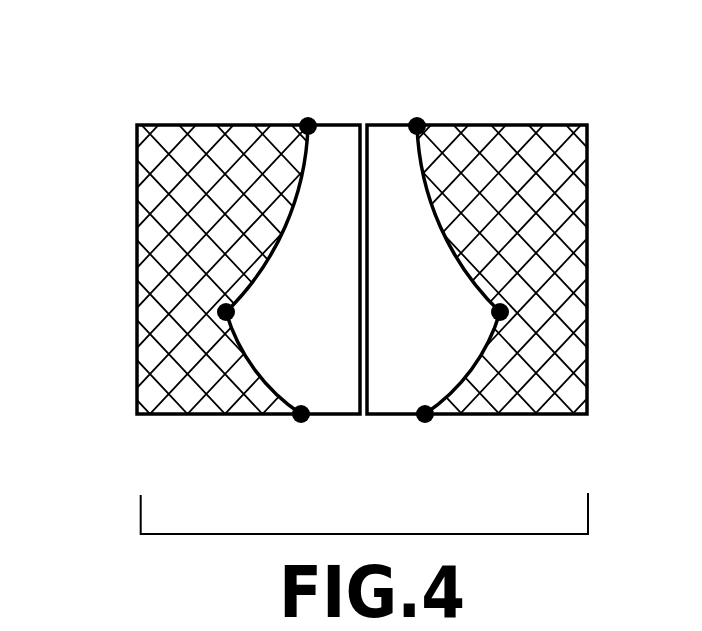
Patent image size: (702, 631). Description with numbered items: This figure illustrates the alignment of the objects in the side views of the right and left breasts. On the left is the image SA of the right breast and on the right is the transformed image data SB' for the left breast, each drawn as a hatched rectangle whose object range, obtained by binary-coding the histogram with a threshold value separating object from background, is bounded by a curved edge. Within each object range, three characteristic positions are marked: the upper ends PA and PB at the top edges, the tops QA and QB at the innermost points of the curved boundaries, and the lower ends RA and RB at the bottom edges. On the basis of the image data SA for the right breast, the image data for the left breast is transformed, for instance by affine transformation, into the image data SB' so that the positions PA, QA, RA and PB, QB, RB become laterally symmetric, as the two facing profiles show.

The image of the right breast SA is at (168, 124).
The transformed image data for the left breast SB' is at (376, 243).
The upper end of the object range of the right breast PA is at (305, 120).
The upper end of the object range of the left breast PB is at (415, 118).
The top of the object range of the right breast QA is at (222, 308).
The top of the object range of the left breast QB is at (505, 308).
The lower end of the object range of the right breast RA is at (300, 420).
The lower end of the object range of the left breast RB is at (425, 420).